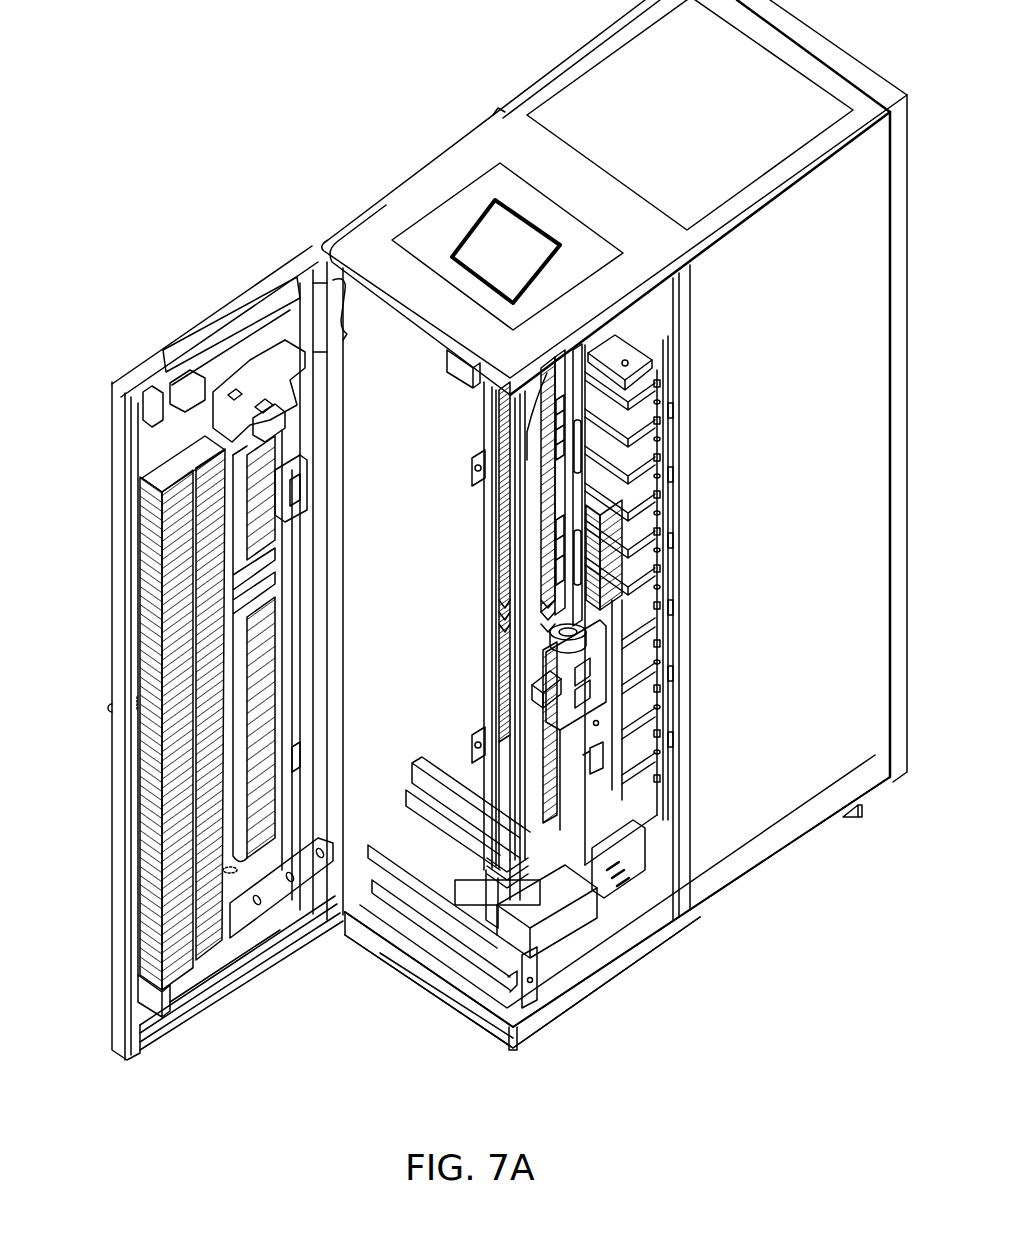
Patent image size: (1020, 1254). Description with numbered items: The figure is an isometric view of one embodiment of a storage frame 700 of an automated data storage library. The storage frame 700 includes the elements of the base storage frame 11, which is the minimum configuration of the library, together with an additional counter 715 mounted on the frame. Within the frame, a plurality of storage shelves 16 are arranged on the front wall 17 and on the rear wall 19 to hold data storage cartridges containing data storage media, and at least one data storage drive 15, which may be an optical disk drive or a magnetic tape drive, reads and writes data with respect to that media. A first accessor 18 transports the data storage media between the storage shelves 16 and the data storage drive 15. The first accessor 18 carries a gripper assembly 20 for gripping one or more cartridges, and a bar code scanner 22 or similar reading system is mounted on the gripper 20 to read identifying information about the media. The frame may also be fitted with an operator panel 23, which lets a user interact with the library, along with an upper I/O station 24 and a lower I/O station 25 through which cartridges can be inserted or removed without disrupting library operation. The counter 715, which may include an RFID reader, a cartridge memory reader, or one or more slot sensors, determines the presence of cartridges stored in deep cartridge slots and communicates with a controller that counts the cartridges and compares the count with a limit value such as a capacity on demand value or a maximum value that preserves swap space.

The storage frame 700 is at (254, 44).
The counter 715 is at (490, 237).
The storage frame 11 is at (328, 1022).
The data storage drive 15 is at (645, 372).
The storage shelves 16 is at (135, 823).
The front wall 17 is at (118, 620).
The first accessor 18 is at (565, 933).
The rear wall 19 is at (487, 428).
The gripper assembly 20 is at (630, 660).
The bar code scanner 22 is at (530, 702).
The operator panel 23 is at (297, 400).
The upper I/O station 24 is at (273, 440).
The lower I/O station 25 is at (273, 670).